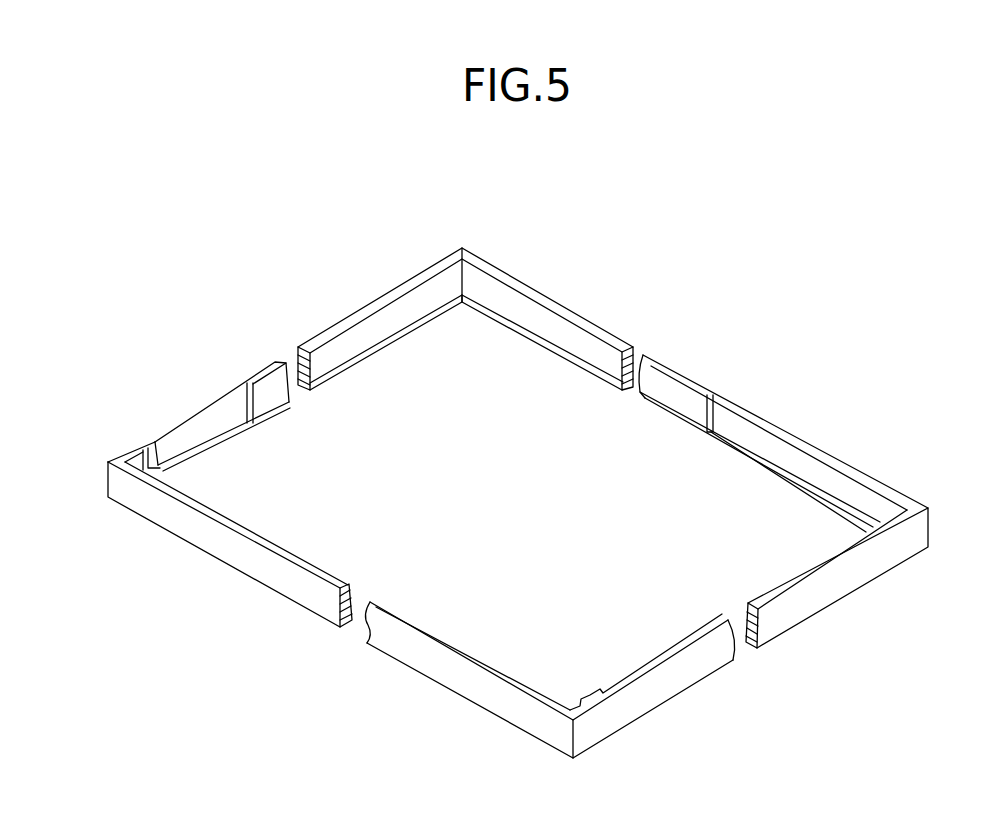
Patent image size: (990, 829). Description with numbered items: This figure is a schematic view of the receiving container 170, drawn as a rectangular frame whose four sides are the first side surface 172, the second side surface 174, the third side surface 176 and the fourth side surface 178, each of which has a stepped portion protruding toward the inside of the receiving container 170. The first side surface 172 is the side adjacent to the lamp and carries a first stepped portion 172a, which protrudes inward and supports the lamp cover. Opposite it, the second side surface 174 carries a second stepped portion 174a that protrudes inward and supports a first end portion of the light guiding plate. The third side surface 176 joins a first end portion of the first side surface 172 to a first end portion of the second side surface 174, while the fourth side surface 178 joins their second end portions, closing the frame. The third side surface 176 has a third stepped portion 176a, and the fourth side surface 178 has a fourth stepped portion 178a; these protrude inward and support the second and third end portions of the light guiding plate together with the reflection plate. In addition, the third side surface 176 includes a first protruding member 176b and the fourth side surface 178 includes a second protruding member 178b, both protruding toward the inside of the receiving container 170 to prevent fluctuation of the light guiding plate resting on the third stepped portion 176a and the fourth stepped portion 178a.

The receiving container 170 is at (475, 214).
The first side surface 172 is at (263, 534).
The first stepped portion 172a is at (350, 612).
The second side surface 174 is at (469, 325).
The second stepped portion 174a is at (530, 336).
The third side surface 176 is at (557, 682).
The third stepped portion 176a is at (745, 636).
The first protruding member 176b is at (583, 692).
The fourth side surface 178 is at (237, 412).
The fourth stepped portion 178a is at (230, 437).
The second protruding member 178b is at (160, 467).